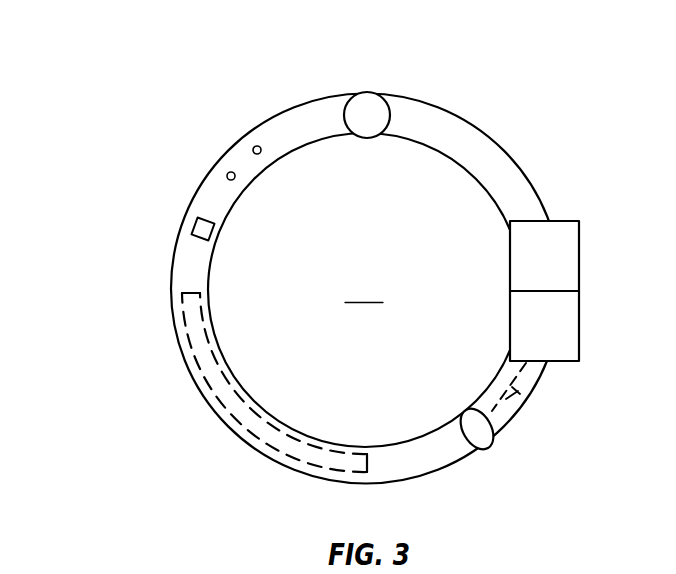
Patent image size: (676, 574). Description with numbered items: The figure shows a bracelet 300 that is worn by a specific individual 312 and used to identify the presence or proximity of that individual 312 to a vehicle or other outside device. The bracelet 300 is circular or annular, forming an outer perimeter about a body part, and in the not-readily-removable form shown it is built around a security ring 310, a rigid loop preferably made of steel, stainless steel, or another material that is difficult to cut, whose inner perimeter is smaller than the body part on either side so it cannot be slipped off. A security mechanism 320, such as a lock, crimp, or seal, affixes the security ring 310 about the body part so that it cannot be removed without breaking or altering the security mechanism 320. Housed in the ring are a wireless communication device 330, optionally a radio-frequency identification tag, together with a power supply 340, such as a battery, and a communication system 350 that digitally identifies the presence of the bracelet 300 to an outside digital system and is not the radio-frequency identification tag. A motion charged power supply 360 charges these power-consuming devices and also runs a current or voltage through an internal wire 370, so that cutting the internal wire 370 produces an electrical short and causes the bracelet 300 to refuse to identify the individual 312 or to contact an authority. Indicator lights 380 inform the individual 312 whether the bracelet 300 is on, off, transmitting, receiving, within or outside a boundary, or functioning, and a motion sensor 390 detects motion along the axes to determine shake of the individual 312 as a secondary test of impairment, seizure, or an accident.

The bracelet 300 is at (548, 60).
The security ring 310 is at (481, 128).
The individual 312 is at (364, 291).
The security mechanism 320 is at (375, 92).
The wireless communication device 330 is at (242, 397).
The power supply 340 is at (562, 220).
The communication system 350 is at (580, 332).
The motion charged power supply 360 is at (496, 440).
The internal wire 370 is at (527, 405).
The indicator light 380 is at (253, 147).
The motion sensor 390 is at (192, 223).